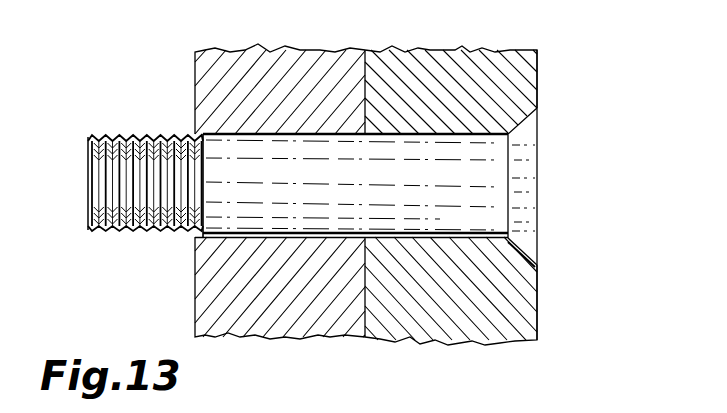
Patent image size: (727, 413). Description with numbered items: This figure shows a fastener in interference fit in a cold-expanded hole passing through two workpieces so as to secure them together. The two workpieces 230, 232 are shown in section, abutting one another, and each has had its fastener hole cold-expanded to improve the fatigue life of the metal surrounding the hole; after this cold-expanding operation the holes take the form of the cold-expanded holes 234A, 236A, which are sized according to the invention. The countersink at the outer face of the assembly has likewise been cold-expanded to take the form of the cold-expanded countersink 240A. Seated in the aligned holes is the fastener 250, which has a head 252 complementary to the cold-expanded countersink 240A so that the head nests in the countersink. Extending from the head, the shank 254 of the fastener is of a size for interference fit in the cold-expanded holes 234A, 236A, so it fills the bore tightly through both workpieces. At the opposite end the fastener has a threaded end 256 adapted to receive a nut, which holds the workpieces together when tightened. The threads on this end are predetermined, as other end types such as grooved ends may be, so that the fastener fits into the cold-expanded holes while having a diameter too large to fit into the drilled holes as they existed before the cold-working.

The workpiece 230 is at (420, 52).
The workpiece 232 is at (263, 52).
The cold-expanded hole 234A is at (418, 233).
The cold-expanded hole 236A is at (258, 233).
The cold-expanded countersink 240A is at (532, 128).
The fastener 250 is at (542, 218).
The head 252 is at (540, 249).
The shank 254 is at (360, 200).
The threaded end 256 is at (140, 233).